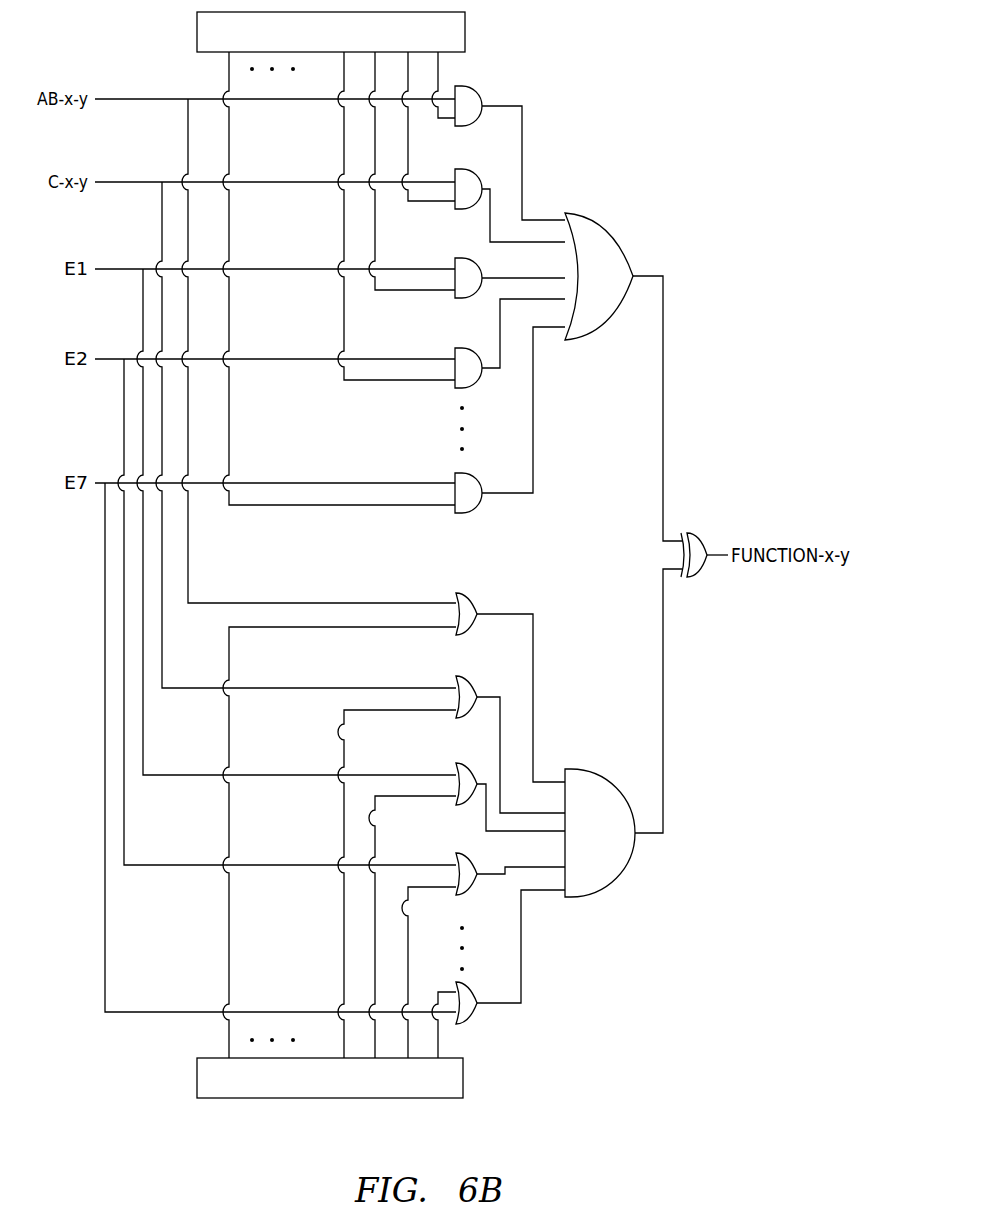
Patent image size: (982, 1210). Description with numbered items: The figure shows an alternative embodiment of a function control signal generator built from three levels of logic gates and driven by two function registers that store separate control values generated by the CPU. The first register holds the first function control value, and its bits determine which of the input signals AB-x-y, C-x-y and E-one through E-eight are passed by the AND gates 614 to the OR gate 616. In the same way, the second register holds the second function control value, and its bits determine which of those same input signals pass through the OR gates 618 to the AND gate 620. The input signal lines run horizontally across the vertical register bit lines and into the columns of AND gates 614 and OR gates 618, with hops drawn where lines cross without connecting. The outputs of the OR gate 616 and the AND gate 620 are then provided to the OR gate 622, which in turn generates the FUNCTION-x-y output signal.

The AND gates 614 is at (482, 98).
The OR gate 616 is at (588, 223).
The OR gates 618 is at (478, 612).
The AND gate 620 is at (595, 892).
The OR gate 622 is at (698, 535).